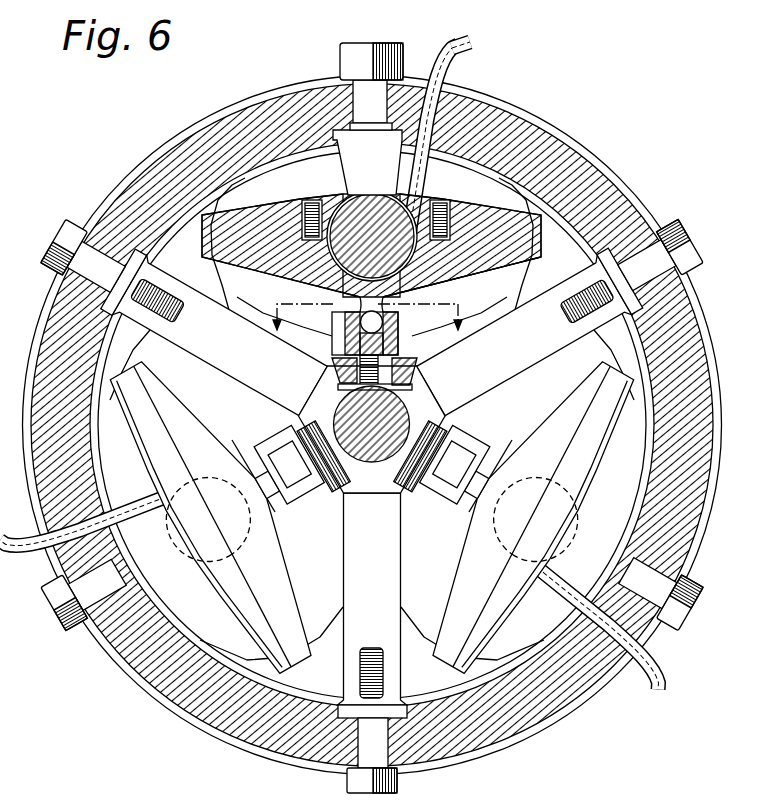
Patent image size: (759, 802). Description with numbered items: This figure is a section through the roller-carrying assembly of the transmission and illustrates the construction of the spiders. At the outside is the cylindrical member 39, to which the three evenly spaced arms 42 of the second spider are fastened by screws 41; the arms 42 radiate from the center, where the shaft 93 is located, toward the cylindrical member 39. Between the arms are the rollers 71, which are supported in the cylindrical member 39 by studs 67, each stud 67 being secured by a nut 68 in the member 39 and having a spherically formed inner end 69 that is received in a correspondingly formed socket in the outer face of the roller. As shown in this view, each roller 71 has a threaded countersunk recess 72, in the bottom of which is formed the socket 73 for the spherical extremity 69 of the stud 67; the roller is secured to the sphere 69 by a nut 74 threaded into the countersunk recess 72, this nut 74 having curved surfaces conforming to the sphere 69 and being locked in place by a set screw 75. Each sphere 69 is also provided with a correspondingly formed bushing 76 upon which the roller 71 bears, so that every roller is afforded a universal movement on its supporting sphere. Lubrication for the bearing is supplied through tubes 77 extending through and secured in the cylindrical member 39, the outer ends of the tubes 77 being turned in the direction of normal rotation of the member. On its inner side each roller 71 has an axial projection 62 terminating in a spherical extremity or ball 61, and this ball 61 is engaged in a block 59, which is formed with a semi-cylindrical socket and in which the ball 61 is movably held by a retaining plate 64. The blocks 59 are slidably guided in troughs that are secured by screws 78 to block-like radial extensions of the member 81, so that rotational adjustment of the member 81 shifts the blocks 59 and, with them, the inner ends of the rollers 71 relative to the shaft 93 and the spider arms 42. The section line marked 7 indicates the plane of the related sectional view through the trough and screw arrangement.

The cylindrical member 39 is at (148, 677).
The screws 41 is at (76, 226).
The arms 42 is at (166, 333).
The block 59 is at (345, 328).
The ball 61 is at (398, 328).
The axial projection 62 is at (387, 300).
The retaining plate 64 is at (356, 300).
The stud 67 is at (350, 165).
The nut 68 is at (346, 58).
The spherically formed inner end 69 is at (372, 236).
The rollers 71 is at (541, 248).
The threaded countersunk recess 72 is at (436, 204).
The socket 73 is at (416, 258).
The nut 74 is at (440, 233).
The set screw 75 is at (313, 206).
The bushing 76 is at (328, 250).
The tubes 77 is at (448, 68).
The screws 78 is at (340, 366).
The member 81 is at (410, 380).
The shaft 93 is at (398, 416).
The section line 7- 7 is at (370, 330).